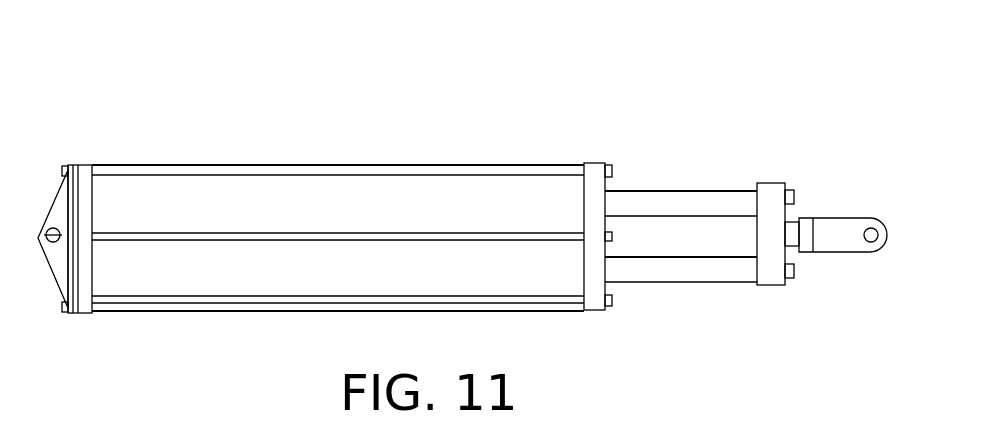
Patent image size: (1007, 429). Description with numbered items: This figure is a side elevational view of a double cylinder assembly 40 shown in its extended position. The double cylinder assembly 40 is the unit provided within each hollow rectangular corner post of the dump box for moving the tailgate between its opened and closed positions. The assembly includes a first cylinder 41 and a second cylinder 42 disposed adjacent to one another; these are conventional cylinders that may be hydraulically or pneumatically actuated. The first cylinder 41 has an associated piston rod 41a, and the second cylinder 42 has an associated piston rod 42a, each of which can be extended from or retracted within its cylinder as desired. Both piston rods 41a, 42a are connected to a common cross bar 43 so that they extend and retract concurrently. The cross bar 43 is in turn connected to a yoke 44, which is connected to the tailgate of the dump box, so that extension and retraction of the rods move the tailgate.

The double cylinder assembly 40 is at (598, 118).
The first cylinder 41 is at (350, 208).
The piston rod 41a is at (680, 200).
The second cylinder 42 is at (255, 275).
The piston rod 42a is at (680, 270).
The cross bar 43 is at (770, 205).
The yoke 44 is at (840, 240).